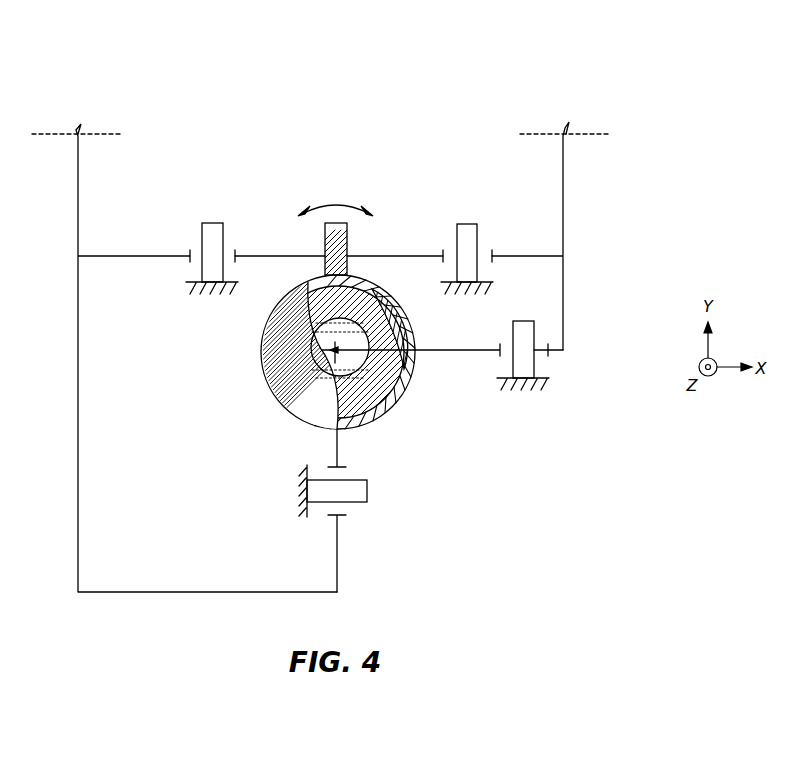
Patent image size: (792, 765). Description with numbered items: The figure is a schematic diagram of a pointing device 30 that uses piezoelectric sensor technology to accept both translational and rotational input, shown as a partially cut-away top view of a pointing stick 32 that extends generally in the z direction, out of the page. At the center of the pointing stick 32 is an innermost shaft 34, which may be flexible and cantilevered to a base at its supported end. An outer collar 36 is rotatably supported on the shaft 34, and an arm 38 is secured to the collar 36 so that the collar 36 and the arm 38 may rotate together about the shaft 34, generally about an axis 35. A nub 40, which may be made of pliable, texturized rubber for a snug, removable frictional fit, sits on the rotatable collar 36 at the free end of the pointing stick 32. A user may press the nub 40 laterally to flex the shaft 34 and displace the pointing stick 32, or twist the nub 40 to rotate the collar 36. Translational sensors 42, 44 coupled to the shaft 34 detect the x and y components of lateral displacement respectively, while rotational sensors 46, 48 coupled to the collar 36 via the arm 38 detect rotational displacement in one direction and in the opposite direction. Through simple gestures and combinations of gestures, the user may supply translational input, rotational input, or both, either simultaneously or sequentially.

The pointing device 30 is at (403, 68).
The pointing stick 32 is at (409, 401).
The innermost shaft 34 is at (360, 392).
The axis 35 is at (398, 320).
The outer collar 36 is at (405, 373).
The arm 38 is at (348, 243).
The nub 40 is at (284, 411).
The translational sensor 42 is at (535, 363).
The translational sensor 44 is at (352, 502).
The rotational sensor 46 is at (467, 223).
The rotational sensor 48 is at (213, 222).